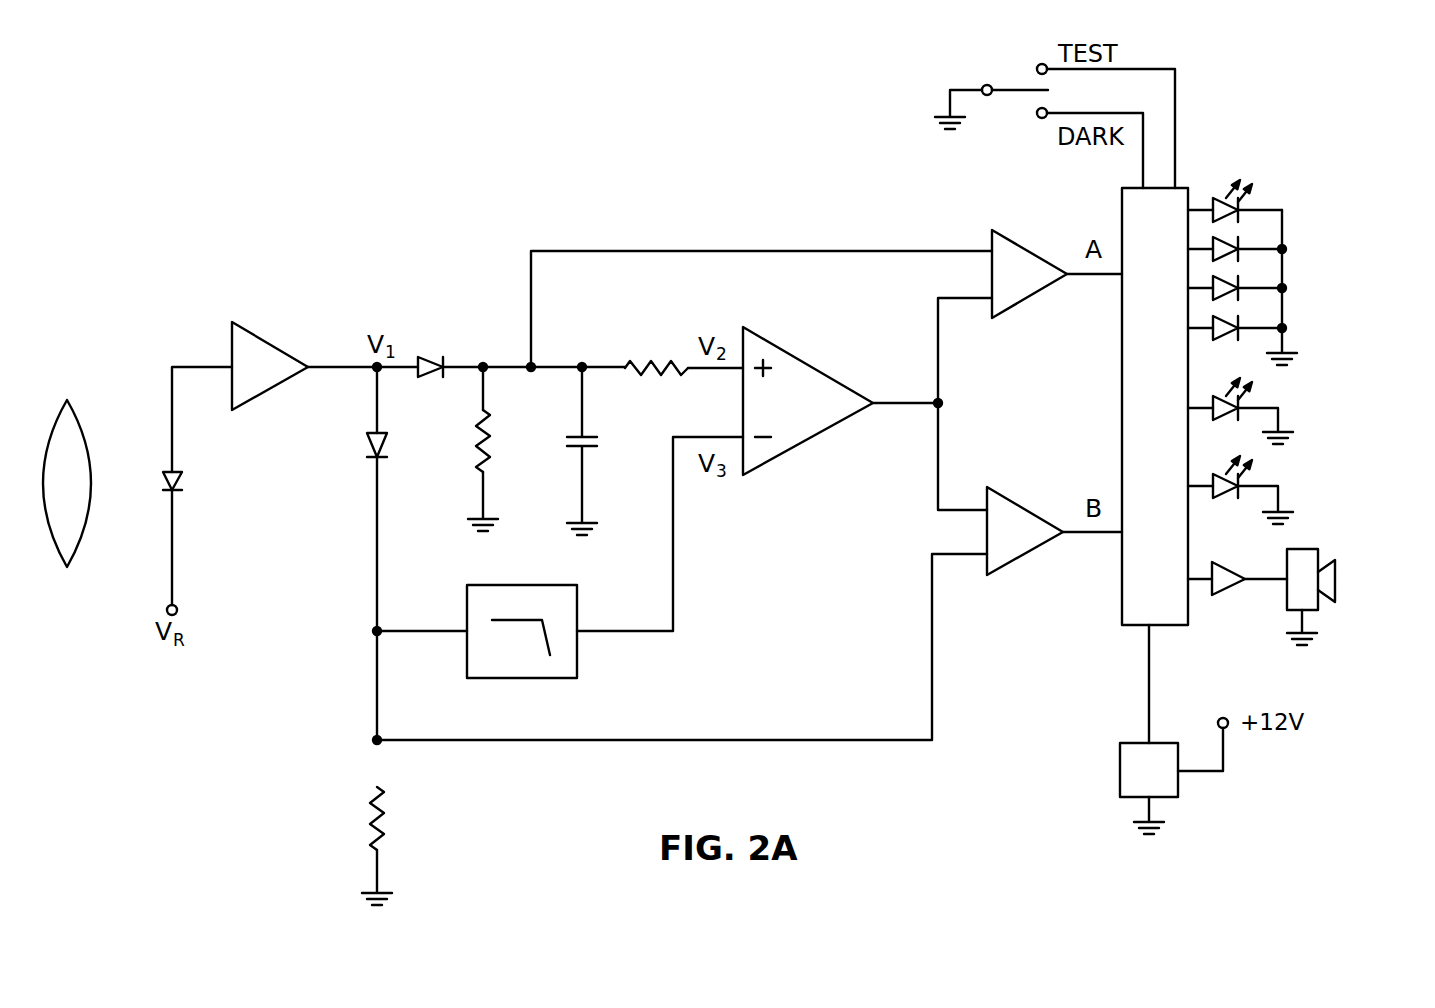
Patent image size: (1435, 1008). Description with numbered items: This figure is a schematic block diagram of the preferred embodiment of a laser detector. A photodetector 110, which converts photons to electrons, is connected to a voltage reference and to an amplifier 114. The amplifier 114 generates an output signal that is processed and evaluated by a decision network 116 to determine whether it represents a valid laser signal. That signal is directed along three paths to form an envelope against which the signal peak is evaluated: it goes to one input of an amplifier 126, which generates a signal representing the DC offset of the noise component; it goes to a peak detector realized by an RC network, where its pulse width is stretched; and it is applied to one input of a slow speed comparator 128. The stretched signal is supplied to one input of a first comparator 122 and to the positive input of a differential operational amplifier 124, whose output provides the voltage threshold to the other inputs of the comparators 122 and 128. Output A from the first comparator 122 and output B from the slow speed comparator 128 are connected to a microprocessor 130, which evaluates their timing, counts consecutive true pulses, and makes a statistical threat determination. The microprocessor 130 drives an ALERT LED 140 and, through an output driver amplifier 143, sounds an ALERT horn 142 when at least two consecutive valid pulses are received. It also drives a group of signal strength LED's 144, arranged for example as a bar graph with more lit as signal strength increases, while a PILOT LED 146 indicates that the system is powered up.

The photodetector 110 is at (178, 484).
The amplifier 114 is at (262, 337).
The decision network 116 is at (581, 168).
The first comparator 122 is at (1027, 302).
The differential operational amplifier 124 is at (782, 345).
The amplifier 126 is at (577, 660).
The slow speed comparator 128 is at (1017, 502).
The microprocessor 130 is at (1188, 188).
The ALERT LED 140 is at (1304, 411).
The ALERT horn 142 is at (1315, 607).
The output driver amplifier 143 is at (1224, 590).
The signal strength LED's 144 is at (1290, 272).
The PILOT LED 146 is at (1300, 490).